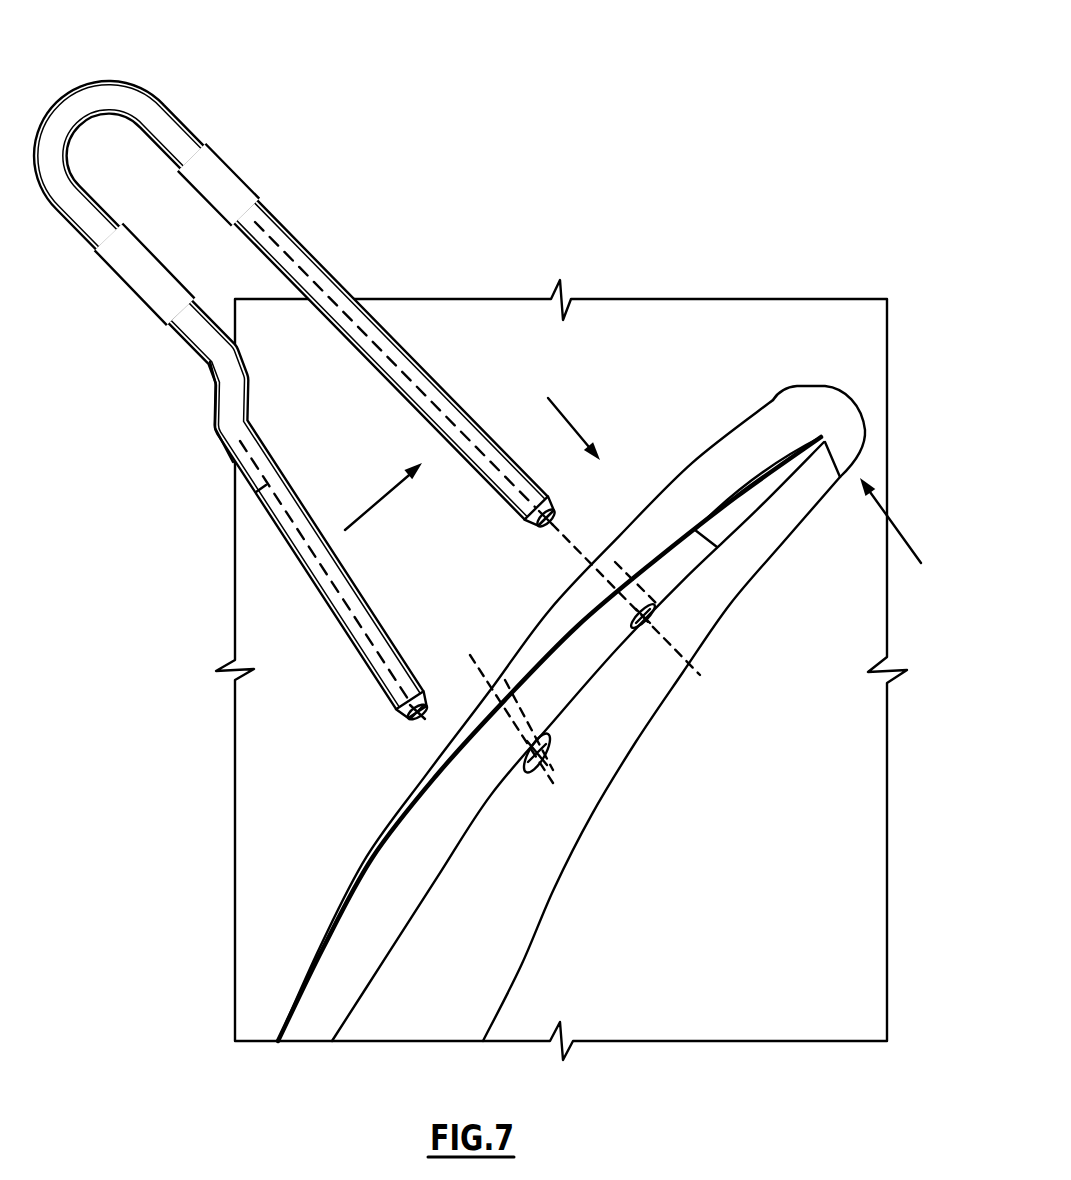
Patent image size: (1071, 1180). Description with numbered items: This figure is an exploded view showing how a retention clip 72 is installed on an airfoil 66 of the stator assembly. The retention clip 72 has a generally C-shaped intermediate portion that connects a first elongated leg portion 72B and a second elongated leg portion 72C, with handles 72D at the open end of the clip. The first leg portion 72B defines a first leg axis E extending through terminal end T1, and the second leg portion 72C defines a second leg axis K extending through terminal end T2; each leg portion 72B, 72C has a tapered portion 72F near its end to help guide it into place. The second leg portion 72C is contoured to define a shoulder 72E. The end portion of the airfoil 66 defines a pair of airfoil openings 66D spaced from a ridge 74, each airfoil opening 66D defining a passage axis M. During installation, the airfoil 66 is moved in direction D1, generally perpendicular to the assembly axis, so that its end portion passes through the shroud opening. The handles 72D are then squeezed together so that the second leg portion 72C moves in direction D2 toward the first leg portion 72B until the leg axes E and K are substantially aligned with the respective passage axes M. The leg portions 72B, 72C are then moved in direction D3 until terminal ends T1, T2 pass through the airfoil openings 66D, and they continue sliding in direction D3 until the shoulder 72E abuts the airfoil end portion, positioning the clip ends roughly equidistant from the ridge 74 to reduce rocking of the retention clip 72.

The retention clip 72 is at (120, 63).
The handles 72D is at (218, 182).
The first elongated leg portion 72B is at (316, 256).
The shoulder 72E is at (233, 396).
The second elongated leg portion 72C is at (322, 600).
The tapered portion 72F is at (558, 512).
The second leg axis K is at (258, 490).
The first leg axis E is at (444, 405).
The terminal end T1 is at (560, 518).
The terminal end T2 is at (432, 732).
The direction D1 is at (904, 540).
The direction D2 is at (388, 493).
The direction D3 is at (570, 424).
The passage axis M is at (474, 660).
The airfoil 66 is at (351, 1051).
The airfoil openings 66D is at (655, 614).
The ridge 74 is at (318, 1012).